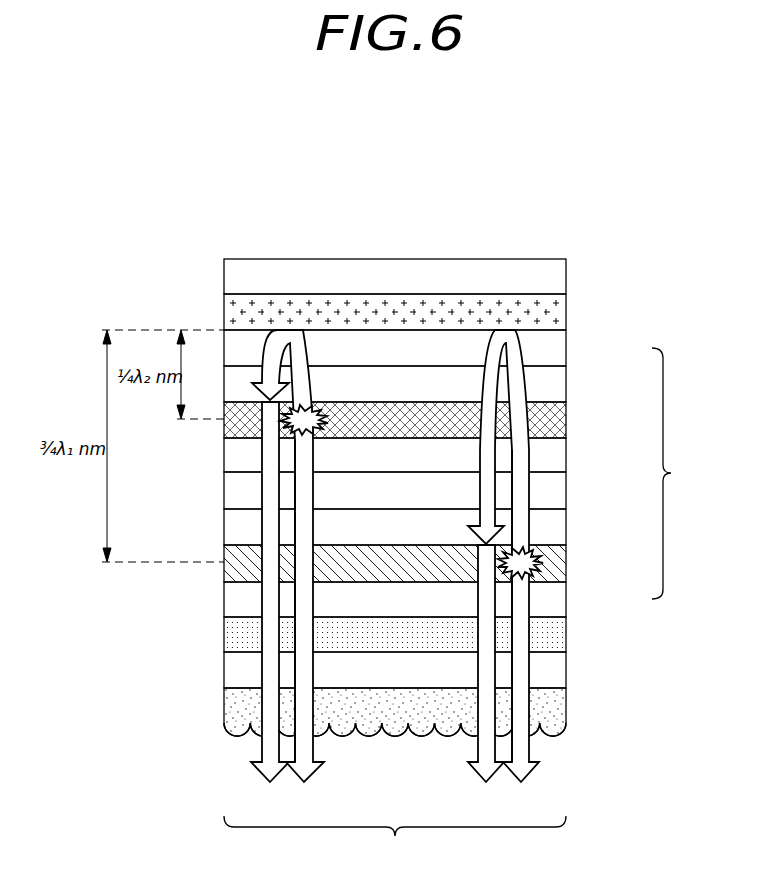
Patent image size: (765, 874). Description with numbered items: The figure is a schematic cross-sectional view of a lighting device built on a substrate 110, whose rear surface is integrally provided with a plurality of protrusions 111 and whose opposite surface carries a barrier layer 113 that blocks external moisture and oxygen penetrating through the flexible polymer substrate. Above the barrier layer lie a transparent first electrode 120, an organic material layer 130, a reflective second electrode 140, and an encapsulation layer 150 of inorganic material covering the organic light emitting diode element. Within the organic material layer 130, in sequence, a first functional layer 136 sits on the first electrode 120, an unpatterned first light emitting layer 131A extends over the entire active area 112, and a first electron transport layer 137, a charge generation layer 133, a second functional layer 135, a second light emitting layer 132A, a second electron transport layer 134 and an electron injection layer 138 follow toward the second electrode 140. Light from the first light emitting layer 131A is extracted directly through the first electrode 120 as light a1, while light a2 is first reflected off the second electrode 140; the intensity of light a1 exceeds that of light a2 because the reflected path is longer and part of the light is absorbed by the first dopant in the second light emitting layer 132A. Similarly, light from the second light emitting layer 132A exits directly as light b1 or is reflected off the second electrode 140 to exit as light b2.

The encapsulation layer 150 is at (553, 278).
The second electrode 140 is at (553, 314).
The electron injection layer 138 is at (553, 350).
The second electron transport layer 134 is at (553, 386).
The second light emitting layer 132A is at (553, 420).
The second functional layer 135 is at (553, 456).
The charge generation layer 133 is at (553, 492).
The first electron transport layer 137 is at (553, 527).
The first light emitting layer 131A is at (553, 565).
The first functional layer 136 is at (553, 598).
The organic material layer 130 is at (679, 473).
The first electrode 120 is at (553, 633).
The barrier layer 113 is at (553, 668).
The substrate 110 is at (553, 710).
The protrusions 111 is at (553, 740).
The active area 112 is at (395, 840).
The light extracted through the first electrode from the first light emitting layer a1 is at (522, 628).
The light reflected off the second electrode from the first light emitting layer a2 is at (503, 568).
The light extracted through the first electrode from the second light emitting layer b1 is at (304, 623).
The light reflected off the second electrode from the second light emitting layer b2 is at (287, 568).